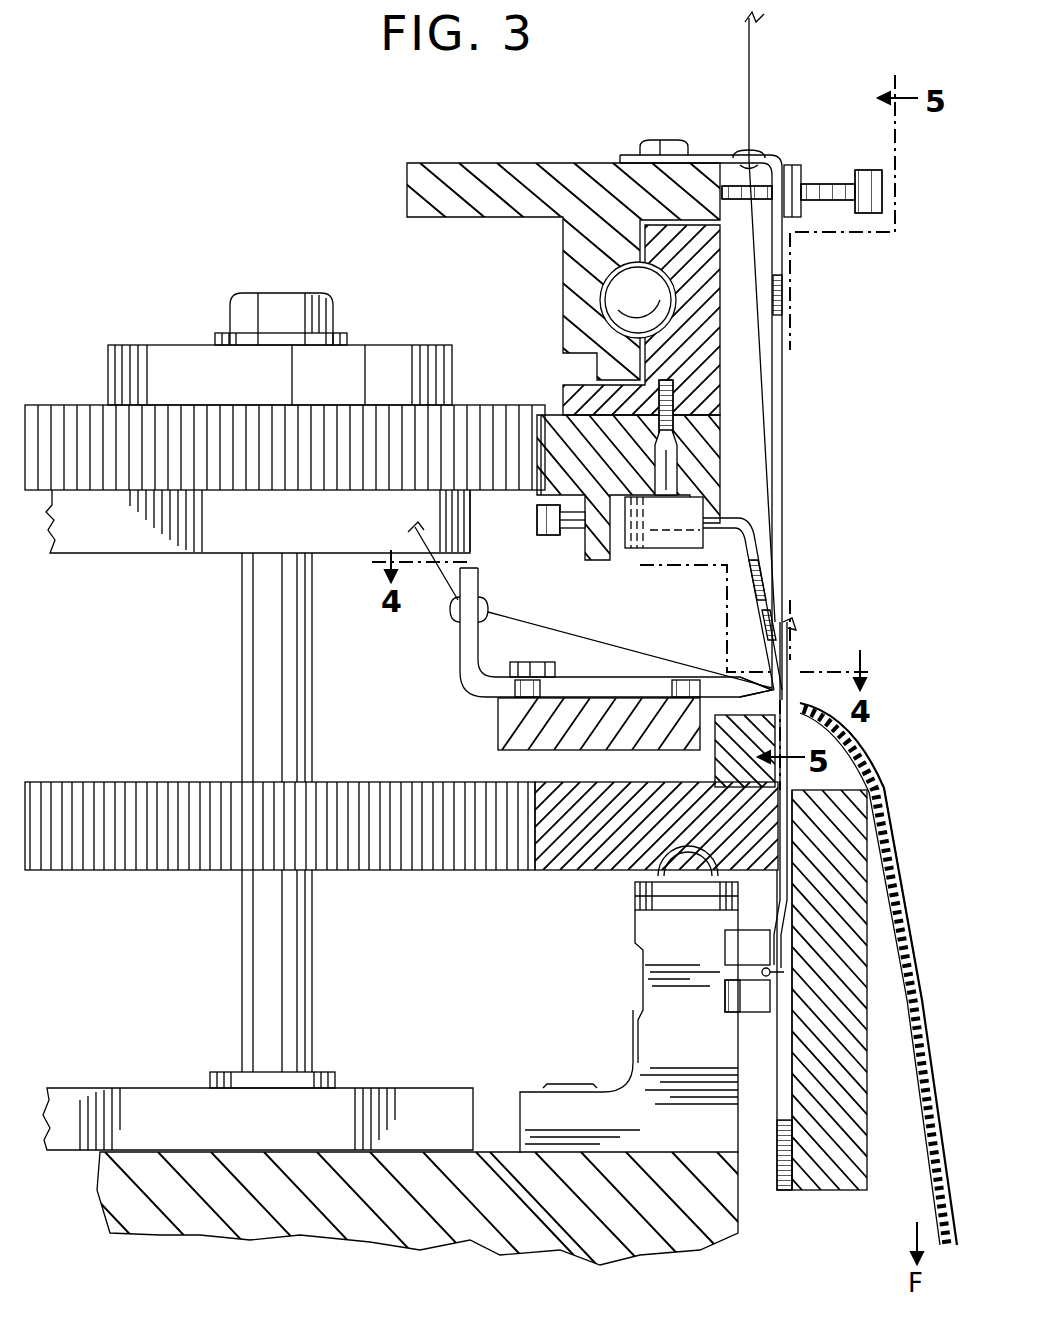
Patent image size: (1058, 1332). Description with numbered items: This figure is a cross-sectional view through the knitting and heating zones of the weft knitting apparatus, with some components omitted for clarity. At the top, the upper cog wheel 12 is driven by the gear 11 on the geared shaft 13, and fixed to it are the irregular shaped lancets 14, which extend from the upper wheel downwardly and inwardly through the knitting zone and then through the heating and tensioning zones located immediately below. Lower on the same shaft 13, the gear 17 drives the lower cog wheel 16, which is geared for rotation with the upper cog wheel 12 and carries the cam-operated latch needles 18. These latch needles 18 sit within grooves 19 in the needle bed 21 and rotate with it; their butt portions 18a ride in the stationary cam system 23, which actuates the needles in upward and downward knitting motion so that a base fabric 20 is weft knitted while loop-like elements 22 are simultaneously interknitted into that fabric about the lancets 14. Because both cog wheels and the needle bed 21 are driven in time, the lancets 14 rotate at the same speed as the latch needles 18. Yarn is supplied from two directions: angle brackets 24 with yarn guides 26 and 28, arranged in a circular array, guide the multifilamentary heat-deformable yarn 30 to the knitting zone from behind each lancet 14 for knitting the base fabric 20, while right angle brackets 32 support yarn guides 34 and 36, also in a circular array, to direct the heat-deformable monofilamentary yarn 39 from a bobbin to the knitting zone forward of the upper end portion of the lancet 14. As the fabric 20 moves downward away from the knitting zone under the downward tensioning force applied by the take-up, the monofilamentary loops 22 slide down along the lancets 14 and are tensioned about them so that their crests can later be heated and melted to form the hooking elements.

The gear 11 is at (65, 428).
The upper cog wheel 12 is at (548, 417).
The geared shaft 13 is at (255, 673).
The lancets 14 is at (735, 530).
The lower cog wheel 16 is at (585, 870).
The gear 17 is at (98, 782).
The latch needles 18 is at (792, 633).
The butt portions 18a is at (758, 960).
The grooves 19 is at (790, 1077).
The base fabric 20 is at (925, 1125).
The needle bed 21 is at (835, 1170).
The loop-like elements 22 is at (900, 875).
The stationary cam system 23 is at (755, 1000).
The angle brackets 24 is at (478, 685).
The yarn guide 26 is at (488, 612).
The yarn guide 28 is at (760, 685).
The multifilamentary heat-deformable yarn 30 is at (635, 646).
The right angle brackets 32 is at (625, 155).
The yarn guide 34 is at (752, 150).
The yarn guide 36 is at (787, 625).
The heat-deformable monofilamentary yarn 39 is at (752, 56).